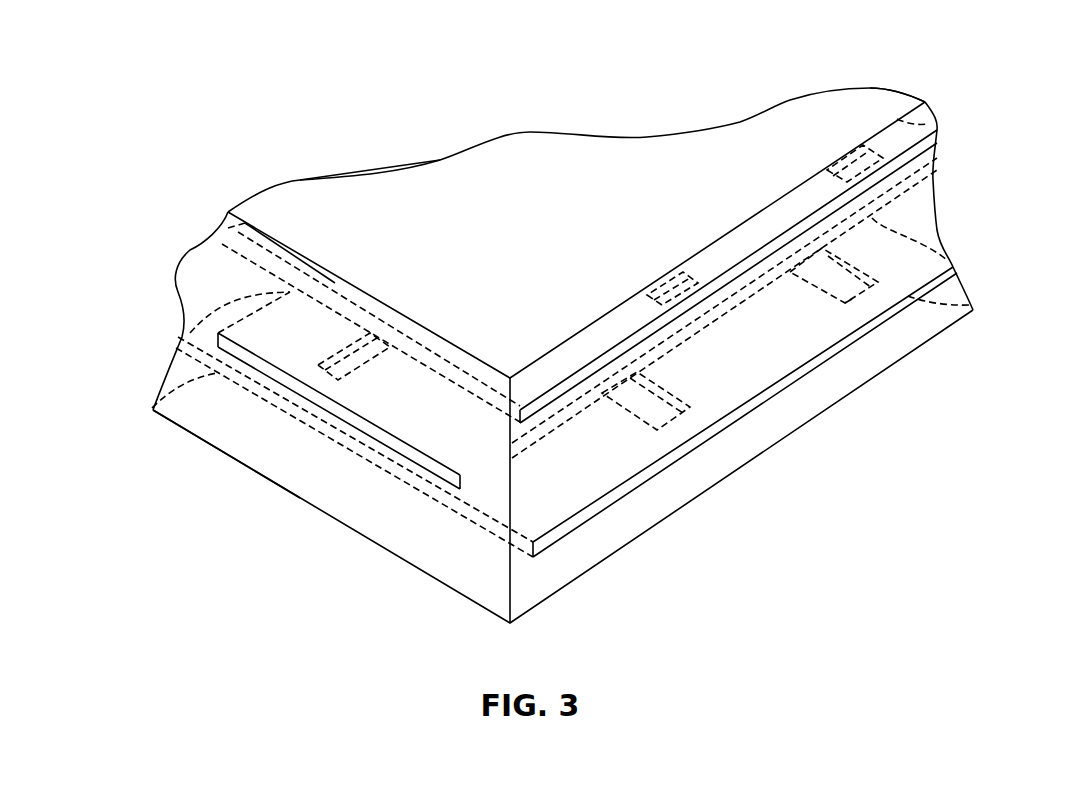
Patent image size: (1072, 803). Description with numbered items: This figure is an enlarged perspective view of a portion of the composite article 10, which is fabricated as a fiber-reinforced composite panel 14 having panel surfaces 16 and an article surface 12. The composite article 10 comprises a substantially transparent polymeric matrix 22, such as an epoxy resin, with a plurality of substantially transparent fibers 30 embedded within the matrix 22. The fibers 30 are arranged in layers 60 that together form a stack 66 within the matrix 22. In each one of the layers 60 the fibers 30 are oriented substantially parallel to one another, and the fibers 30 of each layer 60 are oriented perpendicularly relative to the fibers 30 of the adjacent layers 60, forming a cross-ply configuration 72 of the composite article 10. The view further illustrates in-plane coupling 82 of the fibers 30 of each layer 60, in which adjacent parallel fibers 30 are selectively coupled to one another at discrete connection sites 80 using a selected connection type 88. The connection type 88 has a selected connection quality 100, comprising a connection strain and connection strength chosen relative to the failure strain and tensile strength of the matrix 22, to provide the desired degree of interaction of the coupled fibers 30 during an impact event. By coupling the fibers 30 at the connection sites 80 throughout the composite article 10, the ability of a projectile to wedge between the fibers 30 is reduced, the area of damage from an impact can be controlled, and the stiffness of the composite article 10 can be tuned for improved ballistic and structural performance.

The composite article 10 is at (284, 187).
The article surface 12 is at (362, 190).
The fiber-reinforced composite panel 14 is at (847, 92).
The panel surfaces 16 is at (775, 118).
The polymeric matrix 22 is at (165, 376).
The fibers 30 is at (900, 138).
The layers 60 is at (185, 333).
The stack 66 is at (257, 317).
The cross-ply configuration 72 is at (945, 273).
The connection sites 80 is at (872, 299).
The in-plane coupling 82 is at (913, 297).
The connection type 88 is at (677, 413).
The connection quality 100 is at (852, 299).